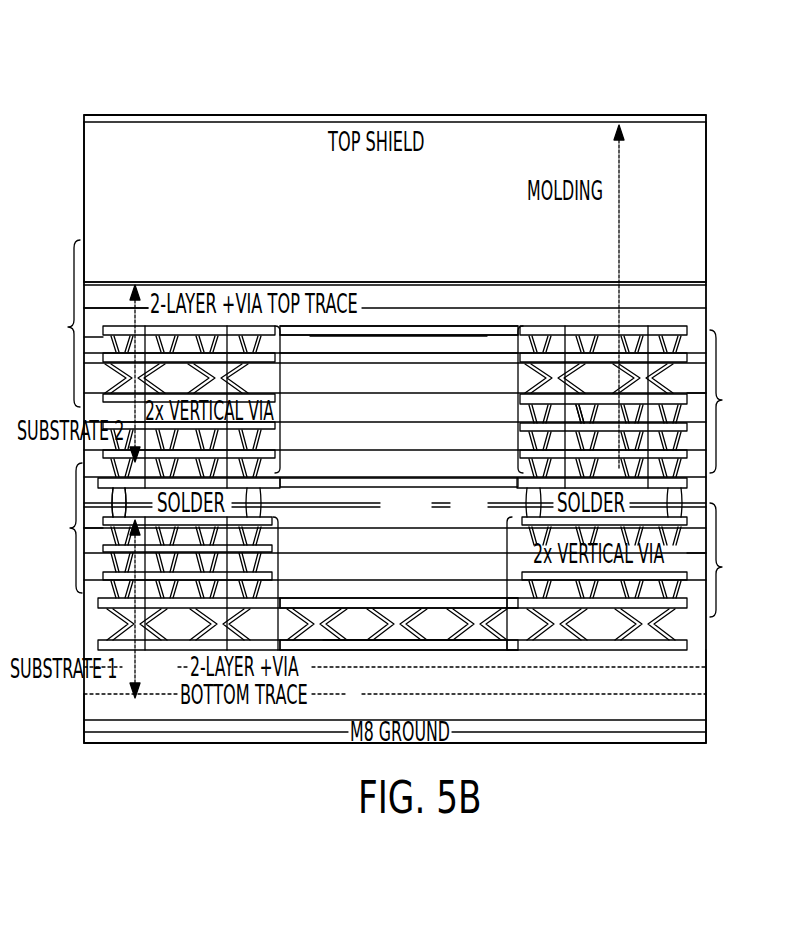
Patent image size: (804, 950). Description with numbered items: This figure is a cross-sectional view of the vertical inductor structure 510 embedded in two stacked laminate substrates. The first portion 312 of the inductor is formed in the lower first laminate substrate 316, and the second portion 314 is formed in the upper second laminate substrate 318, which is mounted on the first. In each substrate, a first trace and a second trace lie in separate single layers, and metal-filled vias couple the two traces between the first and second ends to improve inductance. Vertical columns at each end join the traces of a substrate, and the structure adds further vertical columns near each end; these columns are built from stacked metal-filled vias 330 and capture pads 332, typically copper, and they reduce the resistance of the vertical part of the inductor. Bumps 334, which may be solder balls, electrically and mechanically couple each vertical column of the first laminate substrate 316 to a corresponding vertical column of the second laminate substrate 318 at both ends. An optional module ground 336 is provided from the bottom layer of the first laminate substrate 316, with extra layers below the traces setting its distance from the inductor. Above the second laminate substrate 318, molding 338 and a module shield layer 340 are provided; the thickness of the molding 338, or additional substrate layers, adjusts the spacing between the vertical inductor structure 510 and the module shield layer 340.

The vertical inductor structure 510 is at (615, 73).
The module shield layer 340 is at (200, 115).
The molding 338 is at (93, 167).
The second portion 314 is at (714, 232).
The metal-filled vias 330 is at (573, 467).
The second laminate substrate 318 is at (100, 298).
The capture pads 332 is at (607, 453).
The bumps 334 is at (115, 497).
The module ground 336 is at (558, 727).
The first laminate substrate 316 is at (100, 710).
The first portion 312 is at (720, 728).